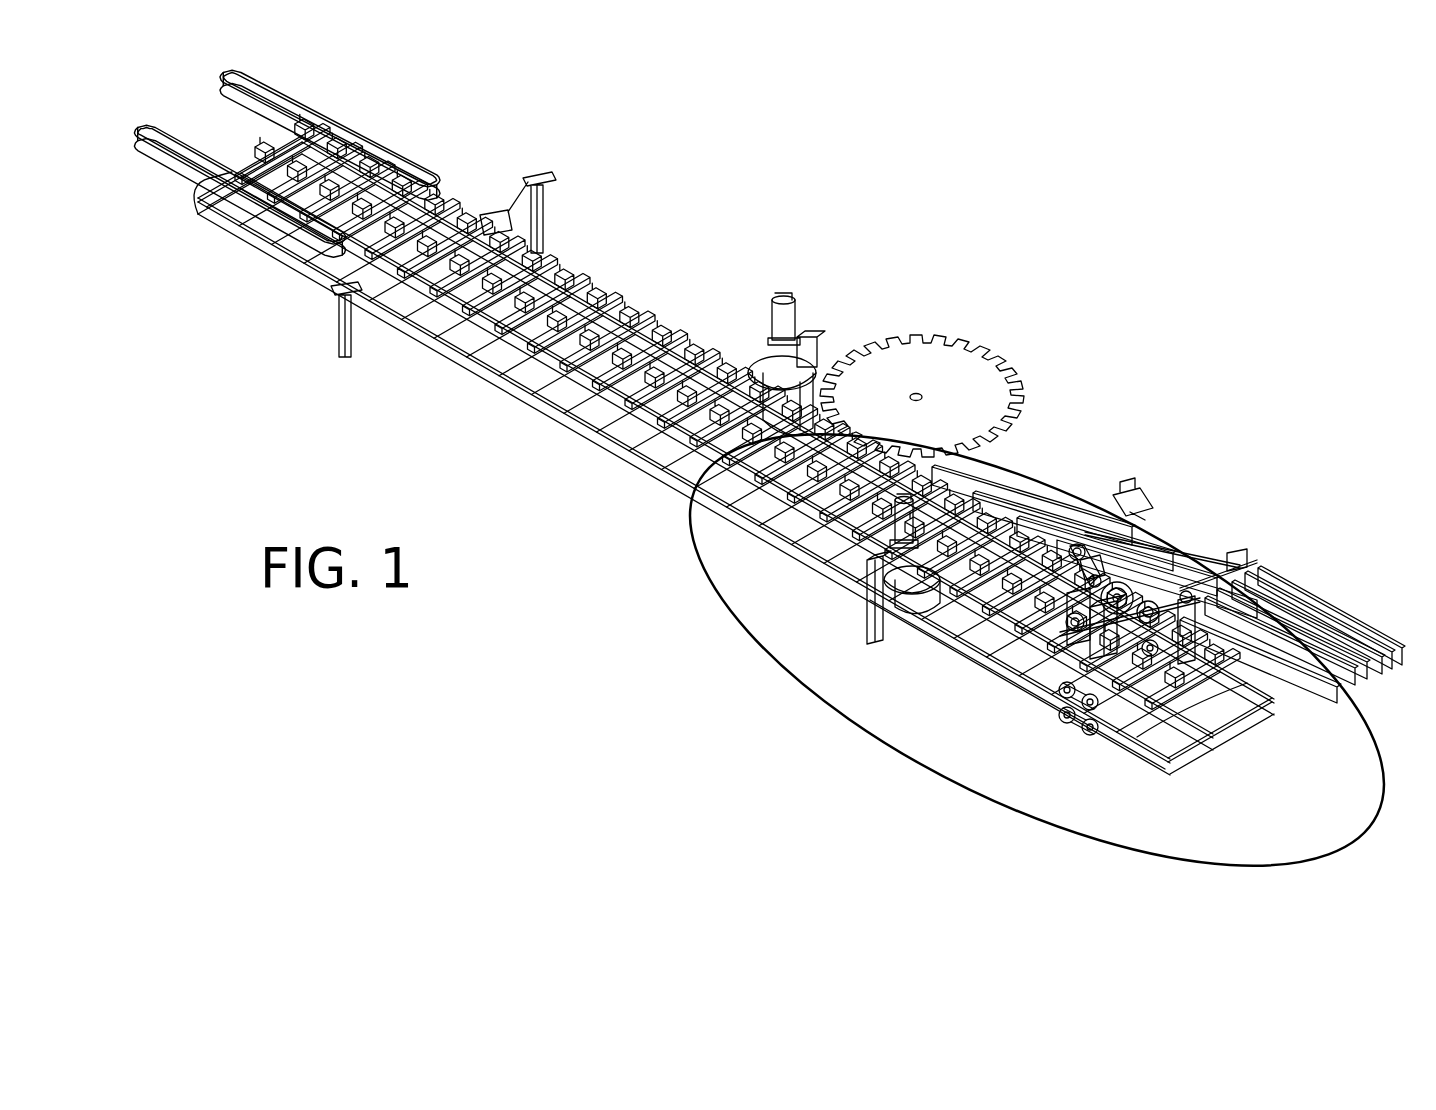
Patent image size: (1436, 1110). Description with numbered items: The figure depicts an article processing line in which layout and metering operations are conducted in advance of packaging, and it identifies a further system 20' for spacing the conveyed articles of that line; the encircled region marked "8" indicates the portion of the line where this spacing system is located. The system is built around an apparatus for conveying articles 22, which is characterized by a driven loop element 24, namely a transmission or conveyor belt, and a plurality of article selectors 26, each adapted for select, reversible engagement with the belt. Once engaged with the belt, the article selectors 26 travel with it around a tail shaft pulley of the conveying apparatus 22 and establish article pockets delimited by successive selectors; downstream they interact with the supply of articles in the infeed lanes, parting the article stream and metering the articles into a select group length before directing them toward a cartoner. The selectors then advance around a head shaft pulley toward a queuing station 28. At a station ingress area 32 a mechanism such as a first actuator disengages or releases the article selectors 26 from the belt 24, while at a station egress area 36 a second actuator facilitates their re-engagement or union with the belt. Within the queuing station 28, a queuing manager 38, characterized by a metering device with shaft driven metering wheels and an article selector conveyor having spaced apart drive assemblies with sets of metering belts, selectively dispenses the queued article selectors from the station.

The apparatus for conveying articles 22 is at (424, 374).
The driven loop element 24 is at (563, 396).
The article selectors 26 is at (852, 530).
The queuing station 28 is at (1008, 668).
The station ingress area 32 is at (894, 624).
The system for spacing conveyed articles 20' is at (1143, 599).
The station egress area 36 is at (1038, 708).
The queuing manager 38 is at (1066, 744).
The detail region of FIG. 8 is at (1306, 863).